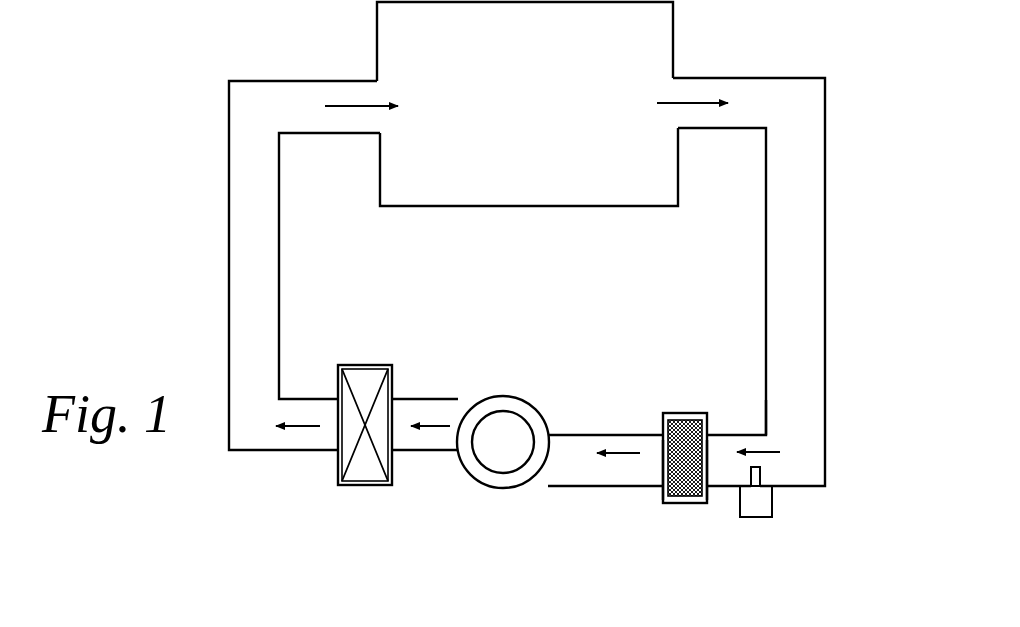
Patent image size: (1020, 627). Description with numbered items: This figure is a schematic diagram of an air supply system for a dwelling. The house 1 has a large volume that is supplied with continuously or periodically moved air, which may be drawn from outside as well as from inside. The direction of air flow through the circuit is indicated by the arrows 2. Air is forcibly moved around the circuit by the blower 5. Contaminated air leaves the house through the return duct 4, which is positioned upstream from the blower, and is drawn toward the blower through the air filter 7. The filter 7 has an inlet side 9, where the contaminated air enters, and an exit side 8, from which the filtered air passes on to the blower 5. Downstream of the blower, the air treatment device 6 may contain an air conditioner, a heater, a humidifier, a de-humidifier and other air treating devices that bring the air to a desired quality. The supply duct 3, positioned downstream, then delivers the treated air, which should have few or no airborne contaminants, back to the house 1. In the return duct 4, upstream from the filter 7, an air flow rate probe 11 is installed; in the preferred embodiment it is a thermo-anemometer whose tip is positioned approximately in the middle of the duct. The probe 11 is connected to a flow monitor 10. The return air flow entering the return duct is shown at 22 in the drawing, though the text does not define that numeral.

The house 1 is at (520, 187).
The arrows 2 is at (345, 100).
The supply duct 3 is at (281, 275).
The return duct 4 is at (766, 232).
The blower 5 is at (507, 423).
The air treatment device 6 is at (357, 377).
The air filter 7 is at (680, 420).
The exit side 8 is at (665, 468).
The inlet side 9 is at (706, 468).
The flow monitor 10 is at (762, 503).
The air flow rate probe 11 is at (760, 475).
The return water flow 22 is at (775, 448).